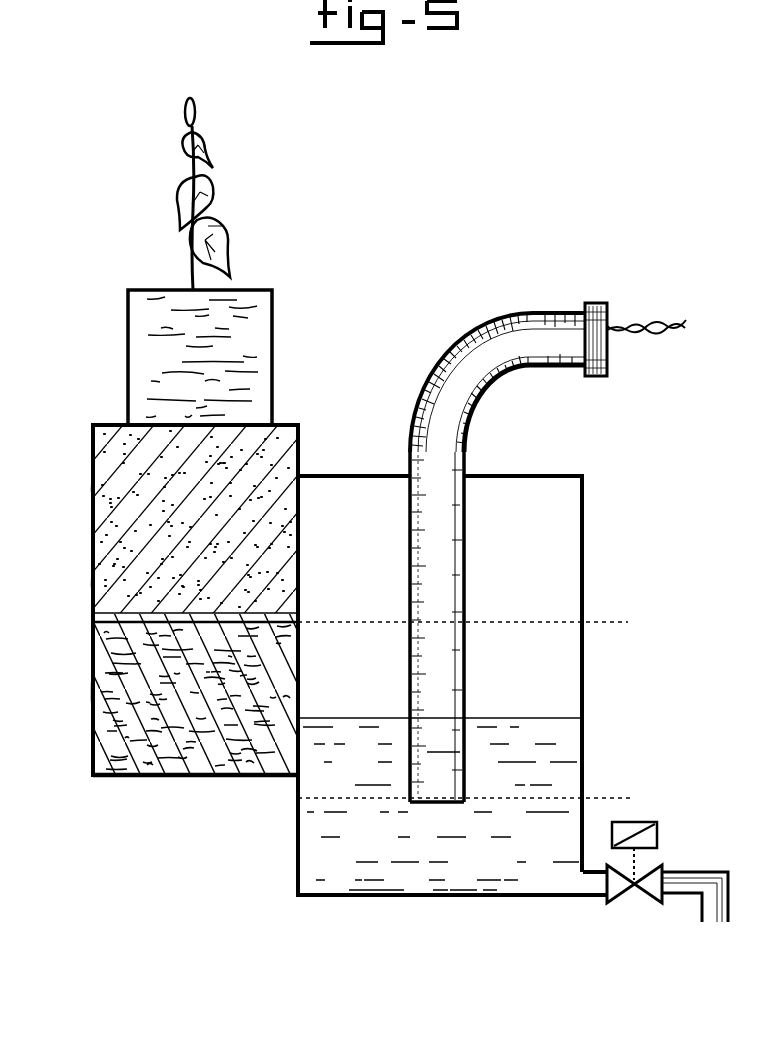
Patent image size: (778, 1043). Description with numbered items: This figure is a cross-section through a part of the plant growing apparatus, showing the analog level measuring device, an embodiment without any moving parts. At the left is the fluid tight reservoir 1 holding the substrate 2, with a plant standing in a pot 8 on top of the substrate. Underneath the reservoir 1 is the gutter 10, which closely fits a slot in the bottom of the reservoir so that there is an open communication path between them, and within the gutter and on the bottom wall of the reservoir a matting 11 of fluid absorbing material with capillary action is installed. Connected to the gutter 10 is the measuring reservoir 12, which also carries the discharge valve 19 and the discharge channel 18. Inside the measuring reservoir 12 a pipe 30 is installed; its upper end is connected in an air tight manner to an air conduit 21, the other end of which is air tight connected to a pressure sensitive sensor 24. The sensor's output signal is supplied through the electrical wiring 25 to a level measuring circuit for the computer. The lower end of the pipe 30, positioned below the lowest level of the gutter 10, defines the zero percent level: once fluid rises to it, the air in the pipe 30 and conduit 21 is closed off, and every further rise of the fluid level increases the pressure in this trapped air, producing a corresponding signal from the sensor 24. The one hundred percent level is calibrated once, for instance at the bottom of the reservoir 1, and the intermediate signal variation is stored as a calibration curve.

The reservoir 1 is at (298, 452).
The substrate 2 is at (117, 535).
The pot 8 is at (272, 342).
The gutter 10 is at (180, 778).
The matting 11 is at (101, 706).
The measuring reservoir 12 is at (583, 514).
The pipe 30 is at (466, 566).
The air conduit 21 is at (492, 388).
The pressure sensitive sensor 24 is at (600, 302).
The electrical wiring 25 is at (640, 324).
The discharge channel 18 is at (712, 883).
The discharge valve 19 is at (654, 890).